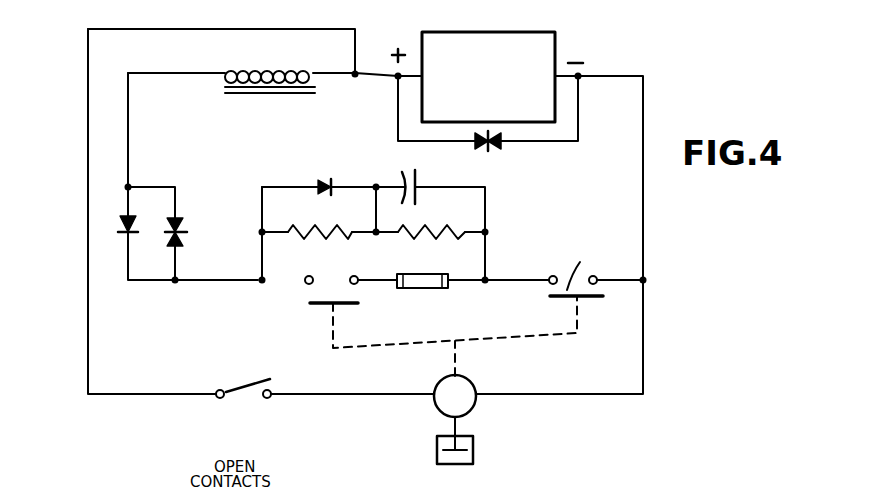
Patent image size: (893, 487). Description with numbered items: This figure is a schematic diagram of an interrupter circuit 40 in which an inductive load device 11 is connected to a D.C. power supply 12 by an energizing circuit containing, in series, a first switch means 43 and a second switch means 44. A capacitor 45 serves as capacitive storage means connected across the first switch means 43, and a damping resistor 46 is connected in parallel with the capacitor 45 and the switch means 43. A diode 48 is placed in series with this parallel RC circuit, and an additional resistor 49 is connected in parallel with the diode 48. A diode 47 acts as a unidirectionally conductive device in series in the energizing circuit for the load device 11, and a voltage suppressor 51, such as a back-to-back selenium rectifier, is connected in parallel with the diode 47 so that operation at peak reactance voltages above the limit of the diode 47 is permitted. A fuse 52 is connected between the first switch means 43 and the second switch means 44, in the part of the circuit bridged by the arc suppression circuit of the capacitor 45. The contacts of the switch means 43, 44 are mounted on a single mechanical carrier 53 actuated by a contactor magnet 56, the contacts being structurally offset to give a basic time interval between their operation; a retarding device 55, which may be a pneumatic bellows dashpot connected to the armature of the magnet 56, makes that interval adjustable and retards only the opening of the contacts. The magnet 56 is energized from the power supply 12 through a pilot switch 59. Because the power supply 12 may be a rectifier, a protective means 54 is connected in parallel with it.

The inductive load device 11 is at (252, 70).
The D.C. power supply 12 is at (532, 53).
The interrupter circuit 40 is at (597, 214).
The first switch means 43 is at (327, 293).
The second switch means 44 is at (580, 262).
The capacitor 45 is at (407, 172).
The damping resistor 46 is at (416, 231).
The diode 47 is at (122, 220).
The diode 48 is at (328, 170).
The additional resistor 49 is at (321, 229).
The voltage suppressor 51 is at (181, 226).
The fuse 52 is at (428, 274).
The mechanical carrier 53 is at (550, 338).
The protective means 54 is at (492, 146).
The retarding device 55 is at (474, 446).
The contactor magnet 56 is at (476, 383).
The pilot switch 59 is at (246, 387).